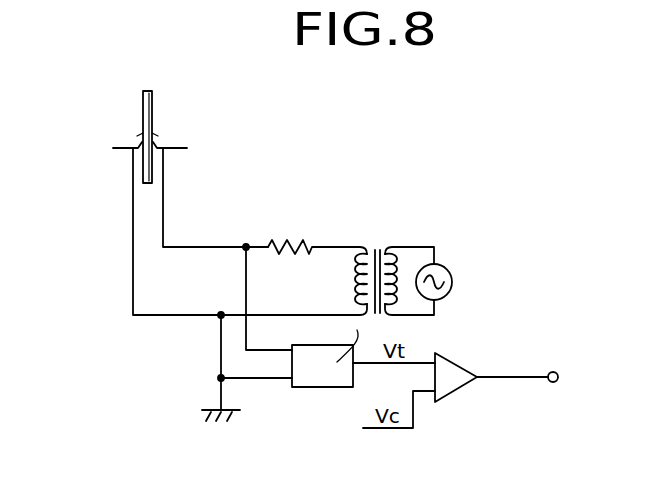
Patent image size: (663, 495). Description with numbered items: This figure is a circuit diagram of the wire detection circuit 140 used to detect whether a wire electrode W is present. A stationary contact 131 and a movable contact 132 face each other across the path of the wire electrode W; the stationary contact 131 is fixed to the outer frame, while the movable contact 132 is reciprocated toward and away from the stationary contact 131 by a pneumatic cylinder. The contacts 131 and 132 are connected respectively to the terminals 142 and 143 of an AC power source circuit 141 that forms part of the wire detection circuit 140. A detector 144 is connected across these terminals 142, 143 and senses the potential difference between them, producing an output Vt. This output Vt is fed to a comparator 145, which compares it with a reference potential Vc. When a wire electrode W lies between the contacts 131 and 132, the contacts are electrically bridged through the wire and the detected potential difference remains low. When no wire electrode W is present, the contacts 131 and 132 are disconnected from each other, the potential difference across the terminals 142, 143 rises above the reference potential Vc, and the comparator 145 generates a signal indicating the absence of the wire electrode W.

The wire electrode W is at (153, 93).
The stationary contact 131 is at (117, 148).
The movable contact 132 is at (185, 143).
The wire detection circuit 140 is at (277, 213).
The AC power source circuit 141 is at (353, 238).
The terminal 142 is at (132, 150).
The terminal 143 is at (165, 152).
The detector 144 is at (319, 388).
The comparator 145 is at (457, 367).